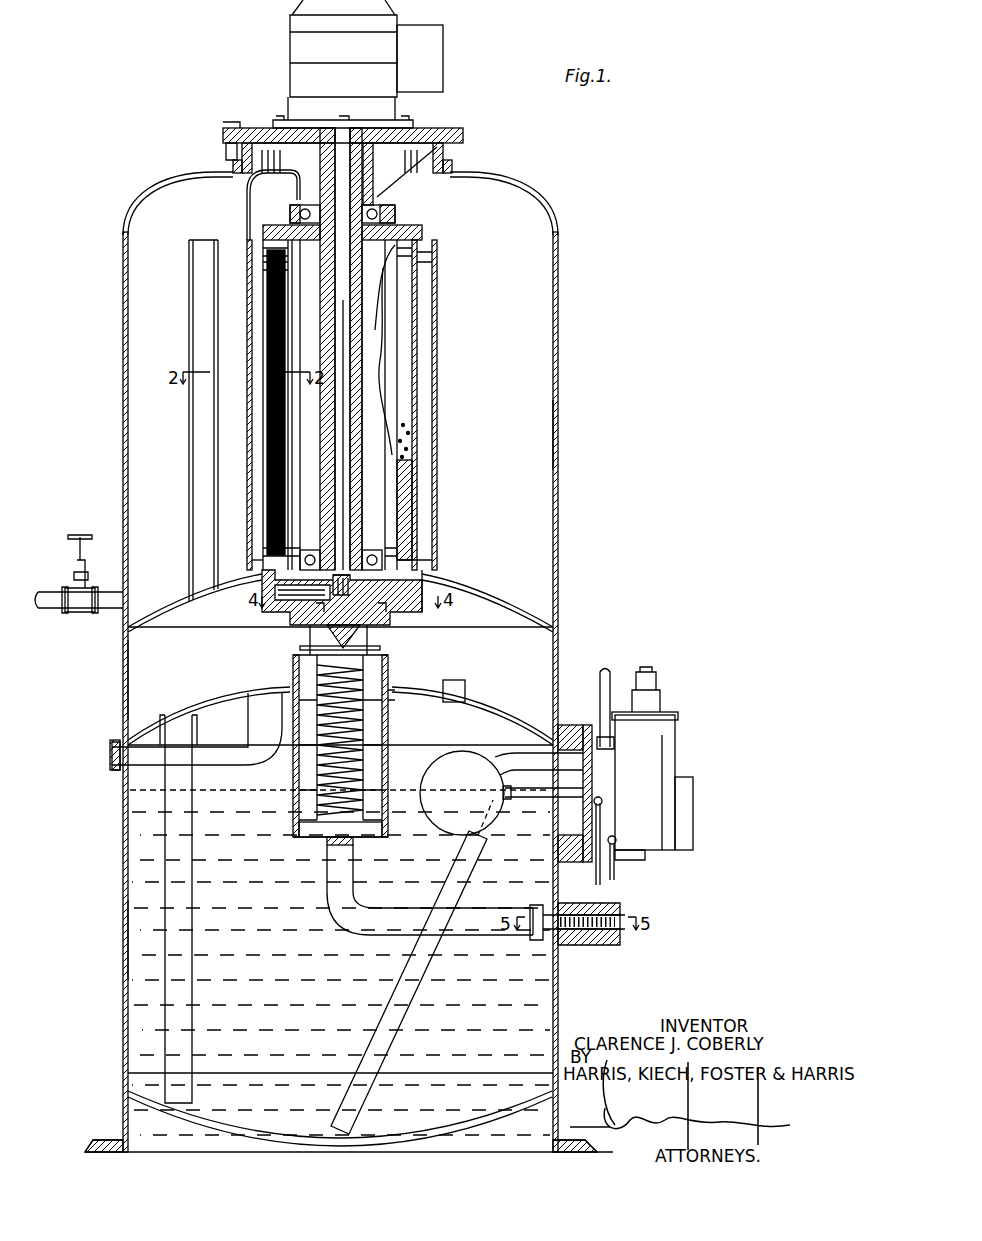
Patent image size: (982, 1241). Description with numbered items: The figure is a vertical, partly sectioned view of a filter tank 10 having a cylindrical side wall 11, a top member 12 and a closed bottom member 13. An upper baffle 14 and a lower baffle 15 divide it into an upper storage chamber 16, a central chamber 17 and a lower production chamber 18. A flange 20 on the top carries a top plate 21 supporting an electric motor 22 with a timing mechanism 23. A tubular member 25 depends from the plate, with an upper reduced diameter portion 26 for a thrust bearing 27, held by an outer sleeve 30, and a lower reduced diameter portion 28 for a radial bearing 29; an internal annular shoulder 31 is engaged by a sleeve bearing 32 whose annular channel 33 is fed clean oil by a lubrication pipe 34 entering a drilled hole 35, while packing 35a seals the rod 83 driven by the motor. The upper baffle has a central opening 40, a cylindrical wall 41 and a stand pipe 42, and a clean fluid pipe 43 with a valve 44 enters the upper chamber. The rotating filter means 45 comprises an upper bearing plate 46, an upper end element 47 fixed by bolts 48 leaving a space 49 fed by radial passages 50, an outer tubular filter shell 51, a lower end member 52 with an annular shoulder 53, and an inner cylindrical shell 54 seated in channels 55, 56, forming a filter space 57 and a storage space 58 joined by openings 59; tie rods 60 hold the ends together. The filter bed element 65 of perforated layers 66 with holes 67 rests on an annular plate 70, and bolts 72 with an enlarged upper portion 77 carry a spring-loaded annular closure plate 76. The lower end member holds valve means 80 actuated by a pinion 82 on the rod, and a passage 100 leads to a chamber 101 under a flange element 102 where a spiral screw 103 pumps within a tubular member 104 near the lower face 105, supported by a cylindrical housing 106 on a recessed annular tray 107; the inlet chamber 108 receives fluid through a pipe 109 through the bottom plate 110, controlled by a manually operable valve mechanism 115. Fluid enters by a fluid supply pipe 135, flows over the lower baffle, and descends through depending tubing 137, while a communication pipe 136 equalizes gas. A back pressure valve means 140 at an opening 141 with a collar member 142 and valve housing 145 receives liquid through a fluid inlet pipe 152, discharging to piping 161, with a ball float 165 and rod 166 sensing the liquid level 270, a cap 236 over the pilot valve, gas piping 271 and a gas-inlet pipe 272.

The filter tank 10 is at (575, 305).
The cylindrical side wall 11 is at (560, 400).
The top member 12 is at (514, 183).
The closed bottom member 13 is at (187, 1128).
The upper baffle 14 is at (510, 601).
The lower baffle 15 is at (510, 724).
The upper storage chamber 16 is at (522, 456).
The central chamber 17 is at (142, 697).
The lower production chamber 18 is at (137, 934).
The flange 20 is at (444, 158).
The top plate 21 is at (462, 132).
The electric motor 22 is at (318, 52).
The timing mechanism 23 is at (430, 61).
The tubular member 25 is at (364, 342).
The upper reduced diameter portion 26 is at (380, 270).
The thrust bearing 27 is at (380, 210).
The lower reduced diameter portion 28 is at (368, 550).
The radial bearing 29 is at (413, 533).
The outer sleeve 30 is at (375, 300).
The internal annular shoulder 31 is at (364, 198).
The sleeve bearing 32 is at (373, 160).
The annular channel 33 is at (373, 175).
The lubrication pipe 34 is at (262, 166).
The drilled hole 35 is at (321, 185).
The packing 35a is at (373, 130).
The central opening 40 is at (424, 571).
The cylindrical wall 41 is at (438, 362).
The stand pipe 42 is at (189, 398).
The clean fluid pipe 43 is at (102, 609).
The valve 44 is at (72, 606).
The filter means 45 is at (410, 401).
The upper bearing plate 46 is at (396, 212).
The upper end element 47 is at (290, 227).
The bolts 48 is at (299, 200).
The space 49 is at (300, 300).
The radial passages 50 is at (423, 232).
The outer tubular filter shell 51 is at (418, 300).
The lower end member 52 is at (391, 613).
The annular shoulder 53 is at (306, 550).
The inner cylindrical shell 54 is at (262, 492).
The channel 55 is at (262, 241).
The channel 56 is at (264, 560).
The filter space 57 is at (425, 551).
The storage space 58 is at (292, 440).
The openings 59 is at (259, 250).
The tie rods 60 is at (290, 475).
The filter bed element 65 is at (433, 502).
The layers 66 is at (413, 470).
The holes 67 is at (408, 450).
The annular plate 70 is at (264, 548).
The bolts 72 is at (267, 270).
The annular closure plate 76 is at (418, 262).
The enlarged upper portion 77 is at (413, 252).
The valve means 80 is at (272, 605).
The pinion 82 is at (382, 627).
The rod 83 is at (350, 477).
The passage 100 is at (424, 582).
The chamber 101 is at (310, 640).
The flange element 102 is at (372, 640).
The spiral screw 103 is at (364, 685).
The tubular member 104 is at (386, 705).
The lower face 105 is at (372, 652).
The cylindrical housing 106 is at (386, 736).
The recessed annular tray 107 is at (430, 712).
The inlet chamber 108 is at (323, 836).
The pipe 109 is at (342, 915).
The bottom plate 110 is at (355, 843).
The manually operable valve mechanism 115 is at (582, 964).
The fluid supply pipe 135 is at (172, 760).
The communication pipe 136 is at (462, 686).
The depending tubing 137 is at (195, 908).
The back pressure valve means 140 is at (650, 750).
The opening 141 is at (548, 805).
The collar member 142 is at (570, 846).
The valve housing 145 is at (662, 828).
The fluid inlet pipe 152 is at (446, 885).
The piping 161 is at (602, 701).
The ball float 165 is at (446, 776).
The rod 166 is at (492, 798).
The cap 236 is at (660, 691).
The liquid level 270 is at (240, 788).
The piping 271 is at (615, 880).
The gas-inlet pipe 272 is at (604, 808).